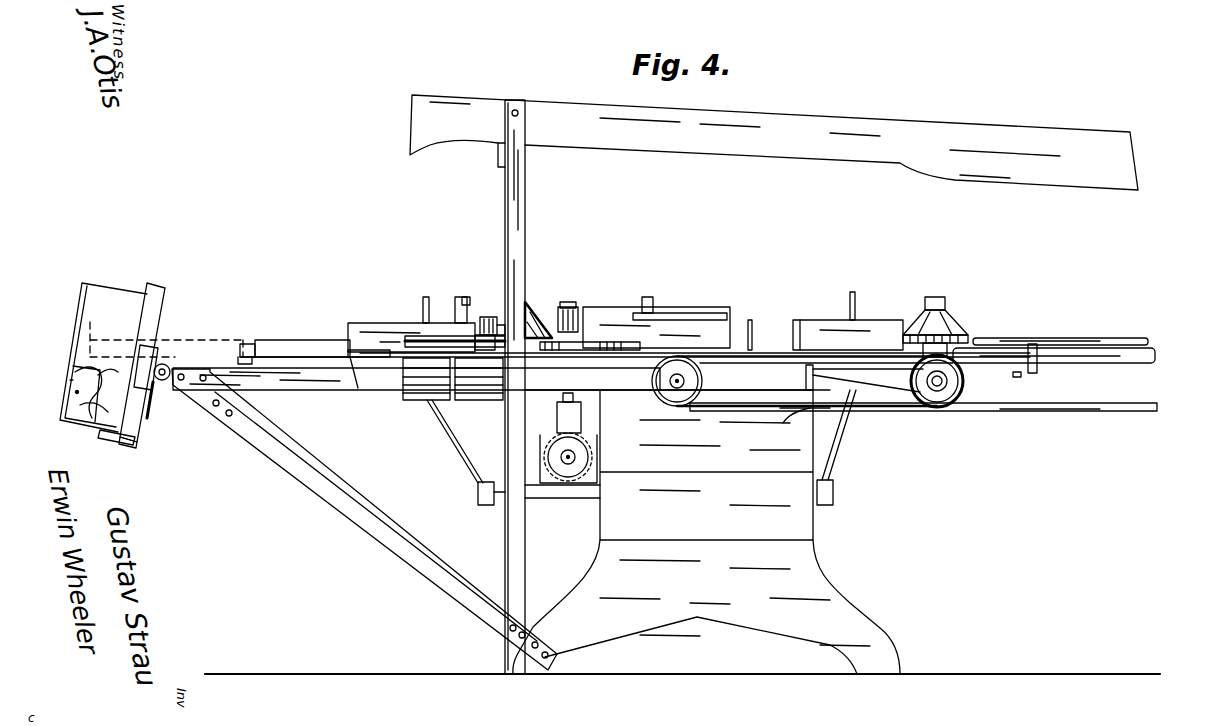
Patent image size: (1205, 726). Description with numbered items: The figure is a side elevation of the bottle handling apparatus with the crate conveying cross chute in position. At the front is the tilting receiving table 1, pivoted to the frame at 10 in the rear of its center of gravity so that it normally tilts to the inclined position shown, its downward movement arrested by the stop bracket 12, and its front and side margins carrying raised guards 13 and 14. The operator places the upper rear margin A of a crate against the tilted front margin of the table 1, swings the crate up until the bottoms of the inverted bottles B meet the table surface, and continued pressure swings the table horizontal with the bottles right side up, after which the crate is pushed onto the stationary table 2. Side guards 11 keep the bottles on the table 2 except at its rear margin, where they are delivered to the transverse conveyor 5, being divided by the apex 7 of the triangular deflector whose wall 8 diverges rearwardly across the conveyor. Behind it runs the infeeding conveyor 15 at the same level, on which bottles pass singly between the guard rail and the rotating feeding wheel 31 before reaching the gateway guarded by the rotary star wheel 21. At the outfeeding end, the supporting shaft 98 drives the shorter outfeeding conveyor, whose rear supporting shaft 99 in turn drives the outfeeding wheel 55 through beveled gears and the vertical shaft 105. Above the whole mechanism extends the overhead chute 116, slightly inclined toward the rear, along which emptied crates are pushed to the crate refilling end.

The tilting receiving table 1 is at (160, 283).
The pivot 10 is at (164, 362).
The stop bracket 12 is at (150, 395).
The raised guard 13 is at (110, 438).
The raised guard 14 is at (125, 440).
The upper rear margin of the crate A is at (112, 415).
The inverted bottles B is at (96, 392).
The side guards 11 is at (278, 350).
The stationary table 2 is at (313, 358).
The conveyor 5 is at (413, 392).
The apex of the deflector 7 is at (353, 331).
The deflector wall 8 is at (378, 336).
The infeeding conveyor 15 is at (481, 375).
The rotating feeding wheel 31 is at (540, 327).
The rotary star wheel 21 is at (609, 345).
The supporting shaft 98 is at (656, 398).
The supporting shaft 99 is at (962, 382).
The vertical shaft 105 is at (934, 297).
The outfeeding wheel 55 is at (998, 322).
The overhead chute 116 is at (828, 143).